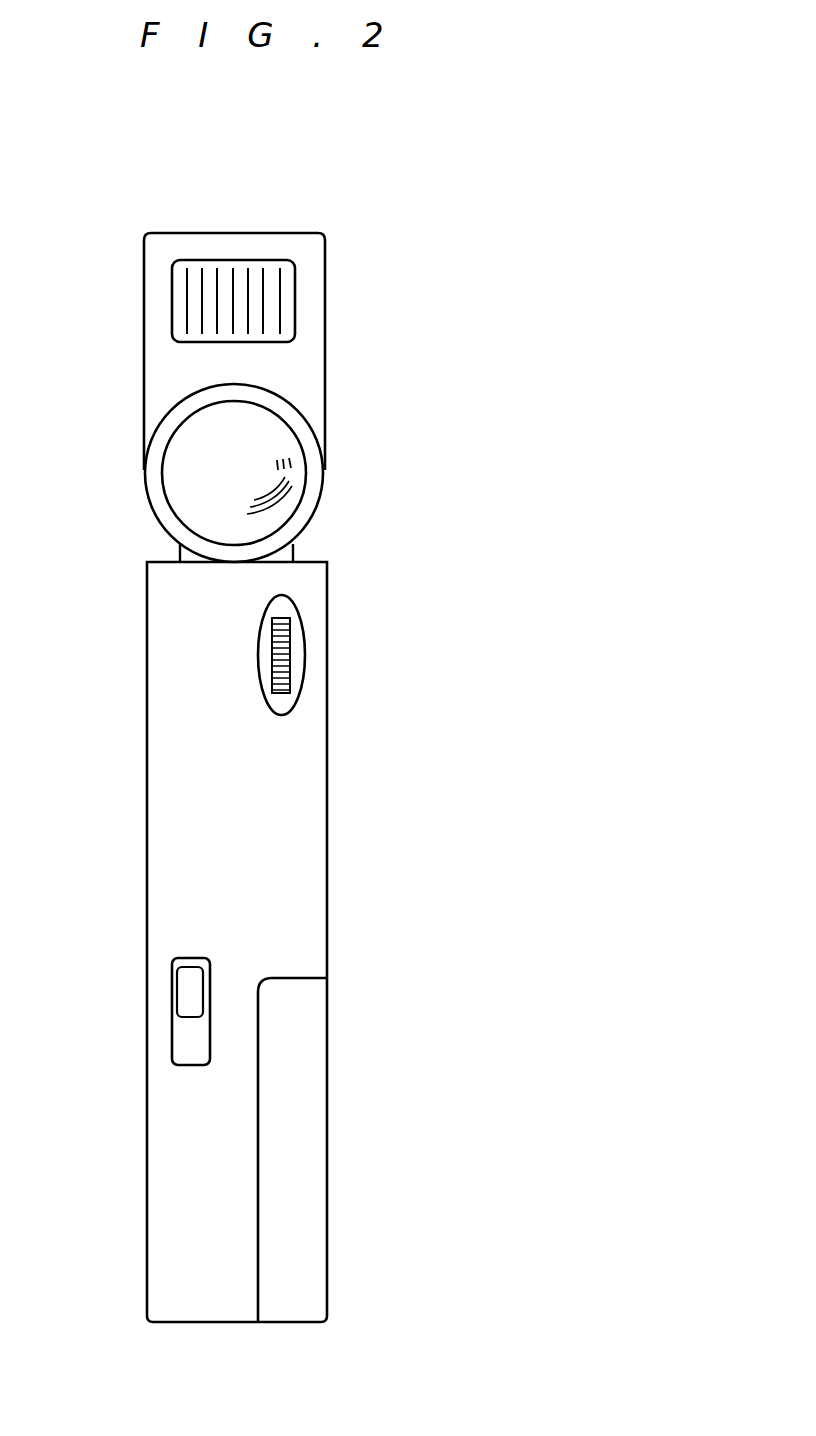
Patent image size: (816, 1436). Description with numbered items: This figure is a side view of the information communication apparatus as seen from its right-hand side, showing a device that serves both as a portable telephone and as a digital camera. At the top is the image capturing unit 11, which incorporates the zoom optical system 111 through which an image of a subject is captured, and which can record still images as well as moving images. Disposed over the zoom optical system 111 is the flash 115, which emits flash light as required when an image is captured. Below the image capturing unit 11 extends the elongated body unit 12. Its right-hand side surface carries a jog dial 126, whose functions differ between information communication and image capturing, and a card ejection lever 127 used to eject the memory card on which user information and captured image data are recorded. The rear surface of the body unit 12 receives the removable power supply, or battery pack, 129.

The image capturing unit 11 is at (380, 359).
The body unit 12 is at (375, 917).
The zoom optical system 111 is at (197, 463).
The flash 115 is at (260, 262).
The jog dial 126 is at (298, 643).
The card ejection lever 127 is at (172, 990).
The removable power supply (battery pack) 129 is at (329, 1115).